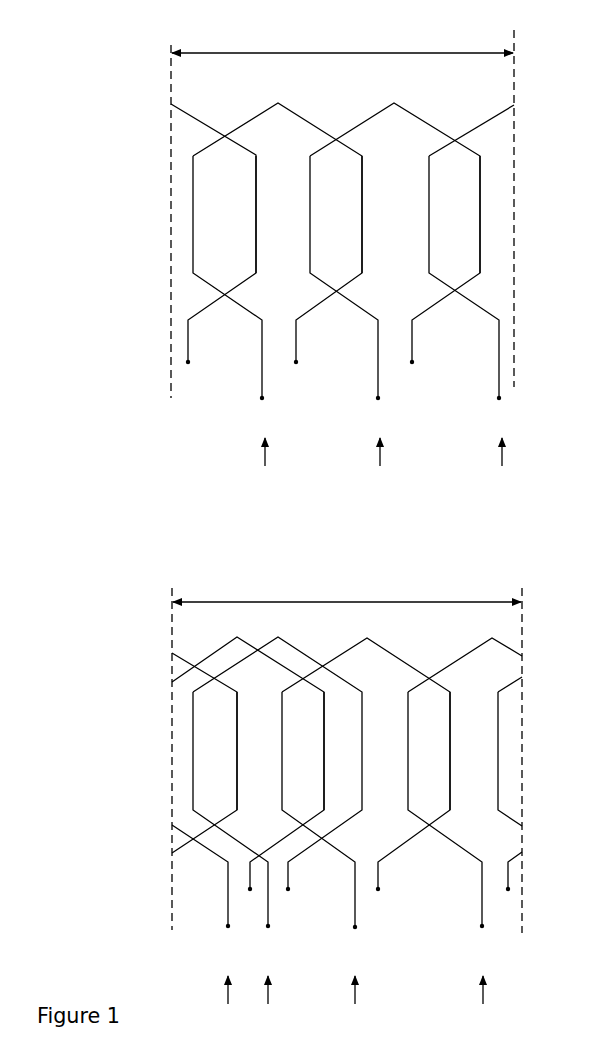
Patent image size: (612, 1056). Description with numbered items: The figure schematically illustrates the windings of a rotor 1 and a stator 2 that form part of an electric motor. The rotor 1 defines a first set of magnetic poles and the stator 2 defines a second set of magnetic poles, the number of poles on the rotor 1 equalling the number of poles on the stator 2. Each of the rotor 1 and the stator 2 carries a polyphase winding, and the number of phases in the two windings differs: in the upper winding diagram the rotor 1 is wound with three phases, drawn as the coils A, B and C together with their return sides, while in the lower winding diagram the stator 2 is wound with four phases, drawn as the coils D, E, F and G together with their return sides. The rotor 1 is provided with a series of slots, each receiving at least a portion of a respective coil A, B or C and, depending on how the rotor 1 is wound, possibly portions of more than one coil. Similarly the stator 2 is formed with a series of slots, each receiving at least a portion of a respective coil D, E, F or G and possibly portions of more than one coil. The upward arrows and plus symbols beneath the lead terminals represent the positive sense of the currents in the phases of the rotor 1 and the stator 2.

The rotor 1 is at (281, 49).
The stator 2 is at (286, 599).
The coil A is at (227, 277).
The coil B is at (344, 277).
The coil C is at (464, 277).
The coil D is at (230, 809).
The coil E is at (318, 809).
The coil F is at (445, 809).
The coil G is at (347, 809).